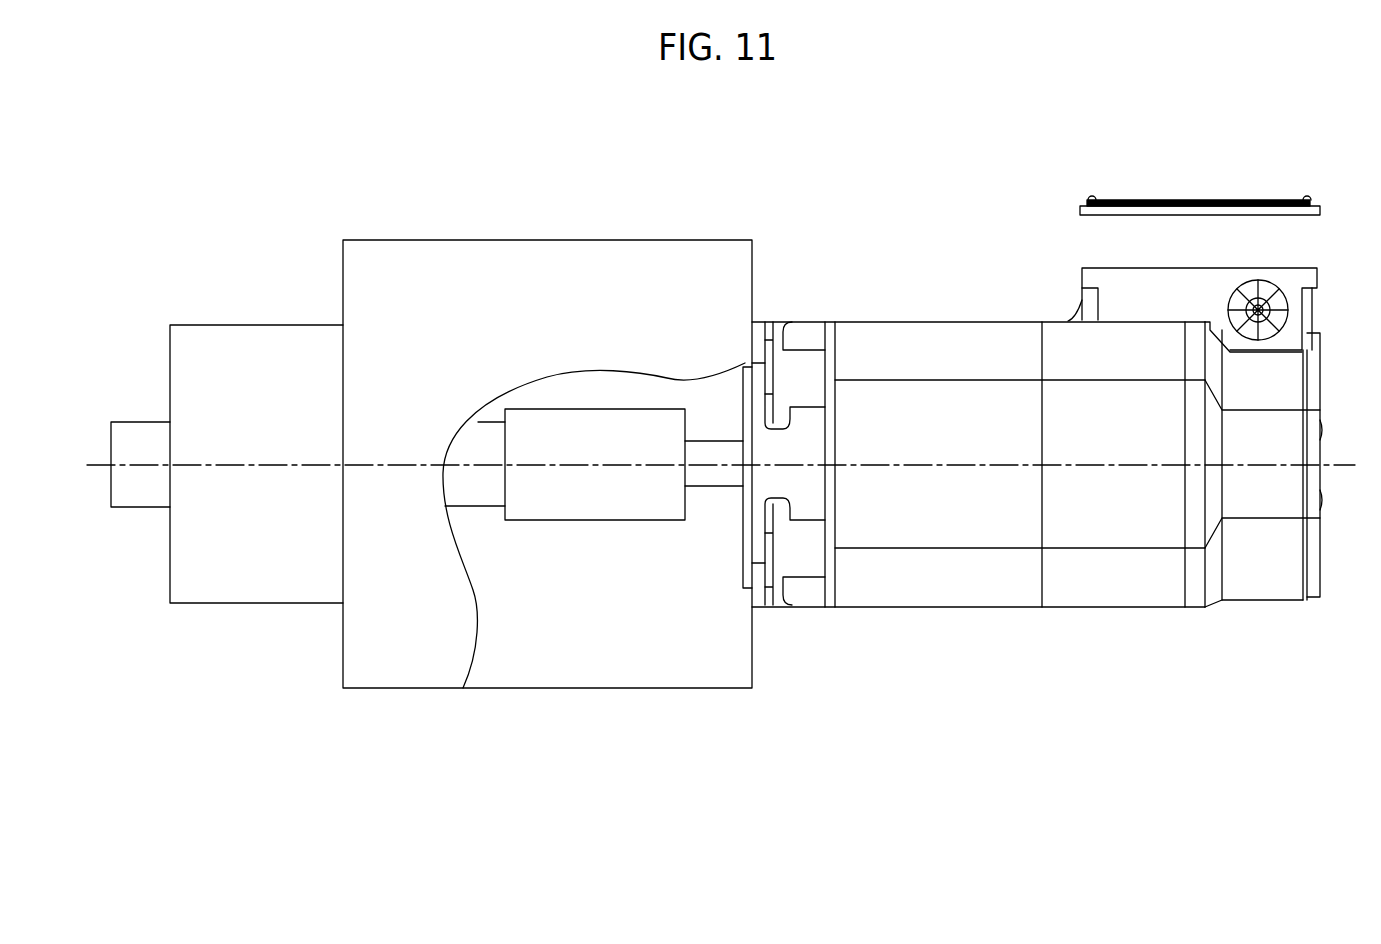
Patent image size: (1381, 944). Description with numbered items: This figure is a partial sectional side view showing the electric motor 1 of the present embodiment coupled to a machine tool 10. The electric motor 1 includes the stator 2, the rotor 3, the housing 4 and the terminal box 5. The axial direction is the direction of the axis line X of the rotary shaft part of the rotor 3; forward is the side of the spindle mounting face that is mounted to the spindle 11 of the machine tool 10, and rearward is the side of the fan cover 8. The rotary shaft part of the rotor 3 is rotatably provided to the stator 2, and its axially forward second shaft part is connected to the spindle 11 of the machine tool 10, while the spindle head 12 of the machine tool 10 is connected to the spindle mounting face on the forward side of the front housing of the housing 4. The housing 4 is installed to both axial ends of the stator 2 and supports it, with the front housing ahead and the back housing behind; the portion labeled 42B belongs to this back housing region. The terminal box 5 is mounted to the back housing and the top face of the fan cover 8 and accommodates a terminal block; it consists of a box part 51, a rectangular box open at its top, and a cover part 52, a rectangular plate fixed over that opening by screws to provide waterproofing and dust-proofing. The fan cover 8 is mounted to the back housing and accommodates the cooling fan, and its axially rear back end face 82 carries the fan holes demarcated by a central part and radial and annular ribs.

The electric motor 1 is at (1048, 327).
The stator 2 is at (1048, 423).
The rotor 3 is at (967, 440).
The housing 4 is at (920, 422).
The bracket attachment portion 42B is at (1055, 322).
The terminal box 5 is at (1208, 235).
The box part 51 is at (1287, 280).
The cover part 52 is at (1160, 200).
The fan cover 8 is at (1279, 464).
The back end face 82 is at (1320, 393).
The machine tool 10 is at (431, 421).
The spindle 11 is at (575, 547).
The spindle head 12 is at (555, 266).
The axis line X is at (94, 467).